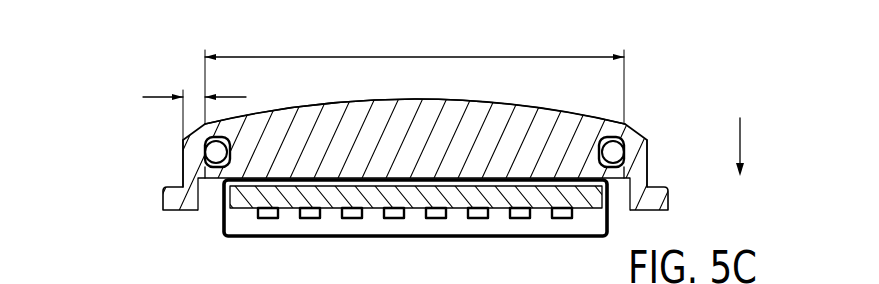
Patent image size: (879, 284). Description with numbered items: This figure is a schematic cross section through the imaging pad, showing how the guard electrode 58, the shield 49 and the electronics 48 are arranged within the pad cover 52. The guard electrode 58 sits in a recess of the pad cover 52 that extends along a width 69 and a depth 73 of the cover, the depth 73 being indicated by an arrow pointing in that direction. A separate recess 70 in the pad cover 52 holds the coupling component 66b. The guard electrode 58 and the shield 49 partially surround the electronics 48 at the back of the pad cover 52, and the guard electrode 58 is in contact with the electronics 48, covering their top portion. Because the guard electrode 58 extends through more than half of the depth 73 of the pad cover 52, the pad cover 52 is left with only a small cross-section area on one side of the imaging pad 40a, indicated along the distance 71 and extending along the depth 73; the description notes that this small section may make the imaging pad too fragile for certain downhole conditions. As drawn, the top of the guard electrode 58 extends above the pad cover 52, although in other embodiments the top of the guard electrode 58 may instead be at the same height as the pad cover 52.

The imaging pad 40a is at (649, 48).
The electronics 48 is at (243, 212).
The shield 49 is at (415, 240).
The pad cover 52 is at (181, 163).
The guard electrode 58 is at (415, 99).
The coupling component 66b is at (621, 150).
The width 69 is at (416, 57).
The recess 70 is at (621, 185).
The distance 71 is at (150, 93).
The depth 73 is at (742, 146).